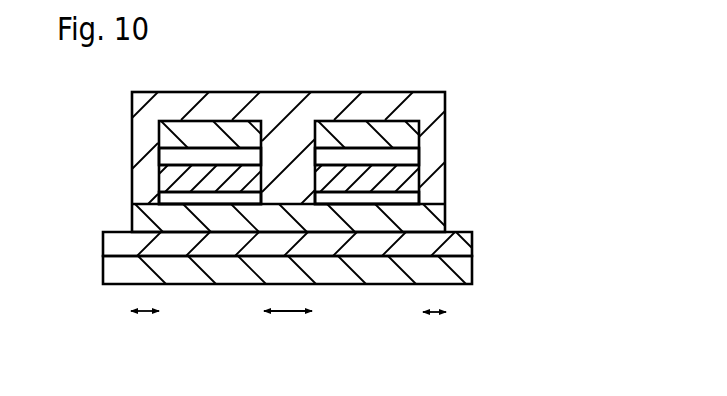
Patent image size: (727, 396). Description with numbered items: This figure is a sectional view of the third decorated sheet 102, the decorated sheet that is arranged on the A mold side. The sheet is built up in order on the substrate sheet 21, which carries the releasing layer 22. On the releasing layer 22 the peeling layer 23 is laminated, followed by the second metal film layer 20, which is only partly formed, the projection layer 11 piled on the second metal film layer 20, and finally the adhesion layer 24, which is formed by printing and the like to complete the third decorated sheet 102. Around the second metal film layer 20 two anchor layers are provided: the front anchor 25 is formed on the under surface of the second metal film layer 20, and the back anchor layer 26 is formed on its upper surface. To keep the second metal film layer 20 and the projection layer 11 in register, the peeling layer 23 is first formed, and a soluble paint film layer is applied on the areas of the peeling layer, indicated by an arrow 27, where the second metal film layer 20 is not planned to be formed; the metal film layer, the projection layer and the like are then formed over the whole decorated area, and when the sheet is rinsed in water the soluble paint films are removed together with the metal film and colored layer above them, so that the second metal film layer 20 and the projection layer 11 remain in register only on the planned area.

The third decorated sheet 102 is at (417, 72).
The adhesion layer 24 is at (437, 104).
The peeling layer 23 is at (437, 218).
The releasing layer 22 is at (465, 246).
The substrate sheet 21 is at (463, 272).
The projection layer 11 is at (157, 121).
The back anchor layer 26 is at (165, 149).
The second metal film layer 20 is at (165, 178).
The front anchor 25 is at (157, 199).
The arrow 27 is at (145, 313).